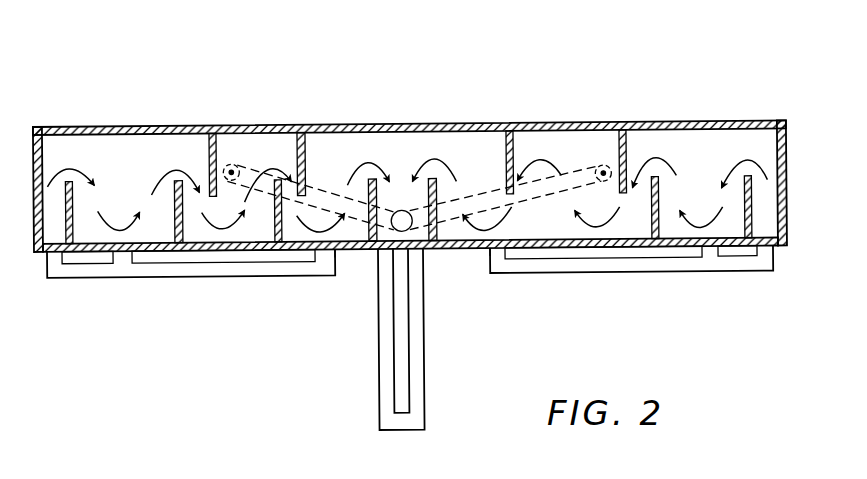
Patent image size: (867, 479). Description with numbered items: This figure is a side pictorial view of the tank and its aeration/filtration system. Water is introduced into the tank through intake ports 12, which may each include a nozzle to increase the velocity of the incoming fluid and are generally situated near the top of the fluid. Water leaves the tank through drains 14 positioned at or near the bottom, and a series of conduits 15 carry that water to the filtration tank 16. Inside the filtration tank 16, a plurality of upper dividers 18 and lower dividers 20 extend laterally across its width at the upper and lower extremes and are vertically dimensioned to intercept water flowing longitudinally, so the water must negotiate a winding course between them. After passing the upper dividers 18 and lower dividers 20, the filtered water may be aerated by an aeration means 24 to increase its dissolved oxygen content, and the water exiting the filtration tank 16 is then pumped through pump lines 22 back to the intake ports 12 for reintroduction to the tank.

The intake port 12 is at (597, 173).
The drain 14 is at (337, 260).
The conduit 15 is at (196, 280).
The filtration tank 16 is at (35, 128).
The upper divider 18 is at (208, 151).
The lower divider 20 is at (175, 213).
The pump line 22 is at (318, 189).
The aeration means 24 is at (425, 389).